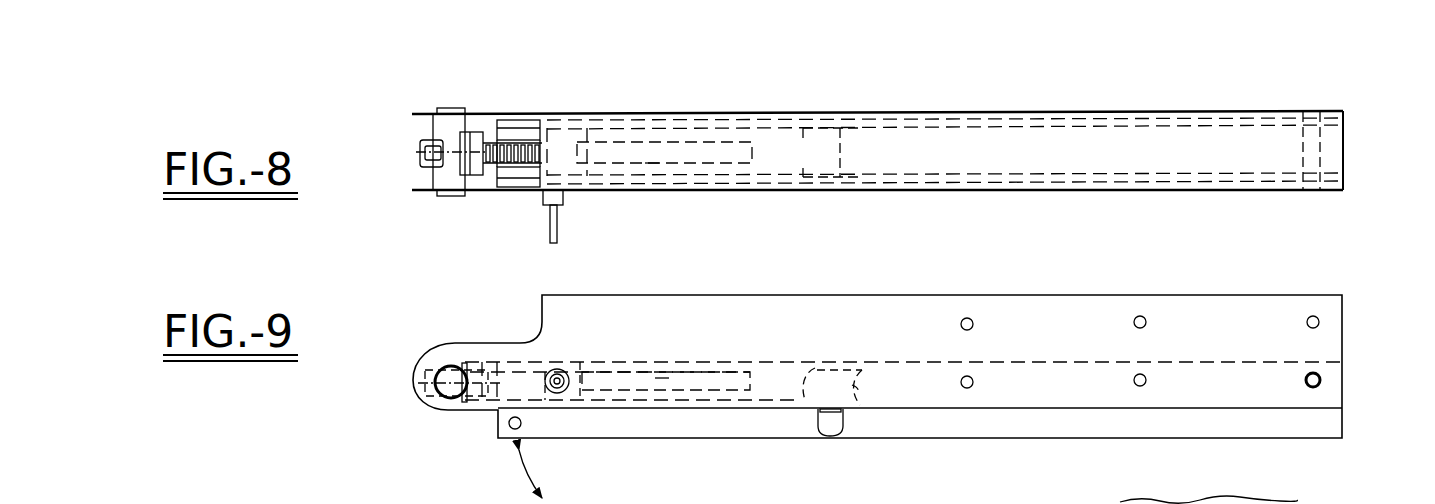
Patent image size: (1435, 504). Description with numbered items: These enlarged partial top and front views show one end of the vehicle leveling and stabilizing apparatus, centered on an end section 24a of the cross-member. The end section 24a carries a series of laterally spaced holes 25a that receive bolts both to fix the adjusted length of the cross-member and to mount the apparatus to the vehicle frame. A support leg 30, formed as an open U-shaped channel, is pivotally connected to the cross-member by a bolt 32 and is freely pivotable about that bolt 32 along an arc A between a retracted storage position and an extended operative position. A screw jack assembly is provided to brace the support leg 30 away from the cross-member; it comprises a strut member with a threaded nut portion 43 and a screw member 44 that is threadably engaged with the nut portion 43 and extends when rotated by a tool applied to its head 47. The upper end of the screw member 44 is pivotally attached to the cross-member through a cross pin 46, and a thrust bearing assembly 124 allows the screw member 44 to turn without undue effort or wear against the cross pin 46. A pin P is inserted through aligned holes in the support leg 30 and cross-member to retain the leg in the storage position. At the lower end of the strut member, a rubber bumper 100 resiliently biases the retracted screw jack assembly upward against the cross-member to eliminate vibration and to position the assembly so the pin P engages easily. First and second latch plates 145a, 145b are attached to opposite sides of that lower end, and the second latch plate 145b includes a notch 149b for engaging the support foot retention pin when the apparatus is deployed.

In FIG. 8, the end section 24a is at (650, 106).
In FIG. 9, the end section 24a is at (848, 290).
In FIG. 9, the holes 25a is at (970, 318).
In FIG. 9, the support leg 30 is at (677, 440).
In FIG. 8, the bolt 32 is at (1312, 112).
In FIG. 9, the bolt 32 is at (1322, 378).
In FIG. 8, the threaded nut portion 43 is at (563, 142).
In FIG. 9, the threaded nut portion 43 is at (586, 360).
In FIG. 8, the screw member 44 is at (652, 158).
In FIG. 9, the screw member 44 is at (662, 378).
In FIG. 8, the cross pin 46 is at (456, 108).
In FIG. 9, the cross pin 46 is at (448, 410).
In FIG. 8, the head 47 is at (420, 150).
In FIG. 9, the head 47 is at (440, 393).
In FIG. 9, the rubber bumper 100 is at (830, 430).
In FIG. 8, the thrust bearing assembly 124 is at (474, 182).
In FIG. 8, the first latch plate 145a is at (836, 128).
In FIG. 8, the second latch plate 145b is at (831, 183).
In FIG. 9, the second latch plate 145b is at (862, 372).
In FIG. 9, the second notch 149b is at (860, 405).
In FIG. 8, the pin P is at (558, 230).
In FIG. 9, the pin P is at (558, 370).
In FIG. 9, the arc A is at (534, 468).